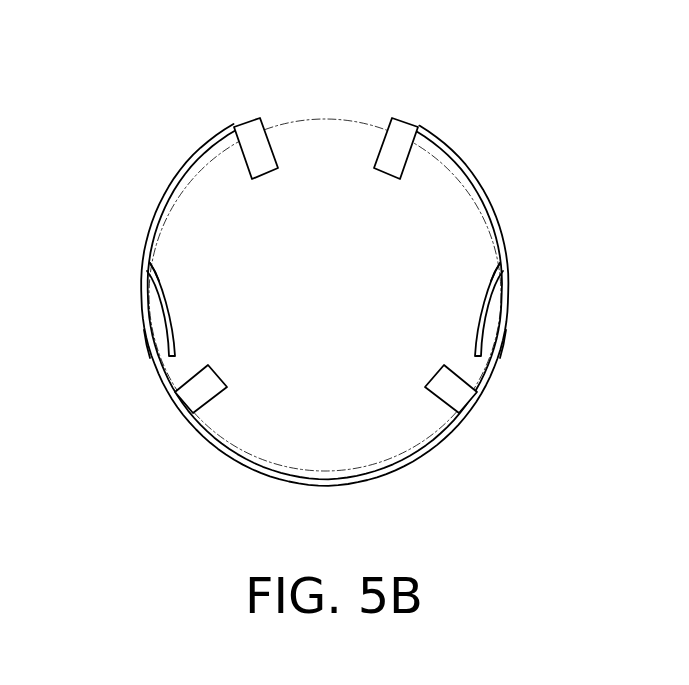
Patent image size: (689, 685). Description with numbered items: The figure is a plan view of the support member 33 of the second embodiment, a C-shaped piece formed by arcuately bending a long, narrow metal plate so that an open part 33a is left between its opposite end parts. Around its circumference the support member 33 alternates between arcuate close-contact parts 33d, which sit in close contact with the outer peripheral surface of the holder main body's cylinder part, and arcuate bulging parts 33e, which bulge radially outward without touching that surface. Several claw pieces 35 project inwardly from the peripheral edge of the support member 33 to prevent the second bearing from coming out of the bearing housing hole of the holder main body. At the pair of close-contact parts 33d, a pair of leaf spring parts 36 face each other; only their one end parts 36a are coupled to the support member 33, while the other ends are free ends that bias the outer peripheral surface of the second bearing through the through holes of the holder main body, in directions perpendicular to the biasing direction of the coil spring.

The support member 33 is at (319, 290).
The open part 33a is at (324, 118).
The close-contact part 33d is at (146, 342).
The bulging part 33e is at (181, 169).
The claw piece 35 is at (387, 158).
The leaf spring part 36 is at (163, 312).
The one end part 36a is at (148, 263).